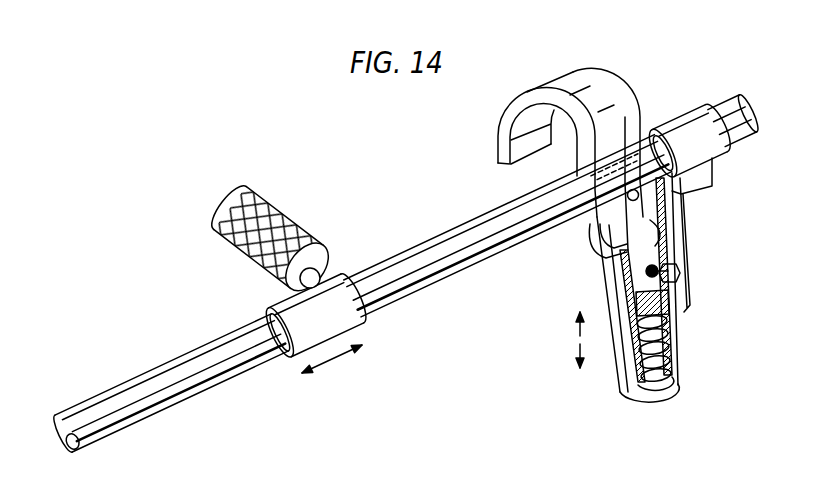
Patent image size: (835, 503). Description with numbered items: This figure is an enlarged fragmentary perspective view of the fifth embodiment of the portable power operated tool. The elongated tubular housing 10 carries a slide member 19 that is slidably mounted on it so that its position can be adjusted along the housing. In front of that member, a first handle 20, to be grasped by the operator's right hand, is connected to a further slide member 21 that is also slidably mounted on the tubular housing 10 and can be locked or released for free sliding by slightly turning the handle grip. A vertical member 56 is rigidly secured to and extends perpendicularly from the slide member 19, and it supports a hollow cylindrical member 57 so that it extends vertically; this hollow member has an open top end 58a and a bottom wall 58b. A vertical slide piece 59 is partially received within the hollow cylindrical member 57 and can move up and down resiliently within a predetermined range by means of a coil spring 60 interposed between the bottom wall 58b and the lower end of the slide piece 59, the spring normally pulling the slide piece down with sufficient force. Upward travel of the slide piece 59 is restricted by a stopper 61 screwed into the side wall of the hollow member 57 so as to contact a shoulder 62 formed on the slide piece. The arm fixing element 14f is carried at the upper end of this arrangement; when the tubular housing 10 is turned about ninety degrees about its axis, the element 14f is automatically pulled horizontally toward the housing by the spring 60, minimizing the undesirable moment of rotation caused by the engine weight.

The tubular housing 10 is at (435, 283).
The arm fixing element 14f is at (597, 90).
The slide member 19 is at (693, 178).
The first handle 20 is at (310, 233).
The slide member 21 is at (358, 324).
The vertical member 56 is at (681, 240).
The hollow cylindrical member 57 is at (620, 393).
The open top end 58a is at (598, 230).
The bottom wall 58b is at (652, 393).
The vertical slide piece 59 is at (535, 238).
The coil spring 60 is at (677, 352).
The stopper 61 is at (678, 276).
The shoulder 62 is at (648, 298).